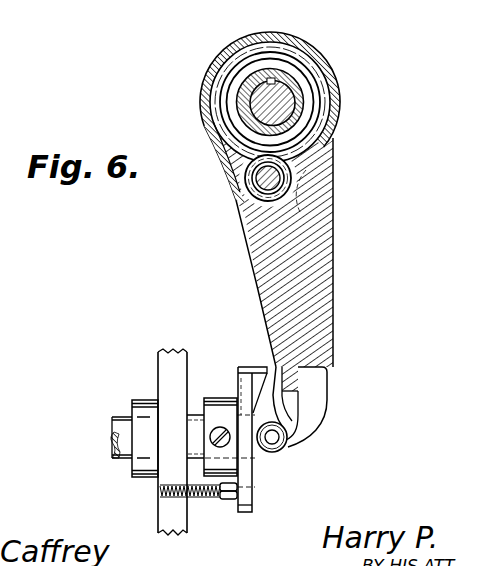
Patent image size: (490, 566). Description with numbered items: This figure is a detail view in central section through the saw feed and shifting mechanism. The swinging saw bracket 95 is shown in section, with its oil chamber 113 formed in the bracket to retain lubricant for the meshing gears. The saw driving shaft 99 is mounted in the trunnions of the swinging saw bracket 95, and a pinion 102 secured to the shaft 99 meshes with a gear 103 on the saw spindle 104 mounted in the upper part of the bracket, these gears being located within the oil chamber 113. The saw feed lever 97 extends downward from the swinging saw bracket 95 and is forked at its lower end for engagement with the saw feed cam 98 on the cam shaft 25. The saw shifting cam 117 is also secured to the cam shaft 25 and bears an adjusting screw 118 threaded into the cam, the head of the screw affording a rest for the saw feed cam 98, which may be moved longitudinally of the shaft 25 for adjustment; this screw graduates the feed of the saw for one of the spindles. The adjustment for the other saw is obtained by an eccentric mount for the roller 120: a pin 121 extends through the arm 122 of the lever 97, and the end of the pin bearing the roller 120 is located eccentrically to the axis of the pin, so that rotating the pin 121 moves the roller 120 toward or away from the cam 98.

The cam shaft 25 is at (125, 415).
The swinging saw bracket 95 is at (227, 174).
The saw feed lever 97 is at (320, 230).
The saw feed cam 98 is at (253, 487).
The saw driving shaft 99 is at (281, 178).
The pinion 102 is at (240, 208).
The gear 103 is at (325, 99).
The saw spindle 104 is at (285, 93).
The oil chamber 113 is at (334, 128).
The saw shifting cam 117 is at (165, 375).
The adjusting screw 118 is at (205, 498).
The roller 120 is at (290, 442).
The pin 121 is at (283, 443).
The arm 122 is at (316, 375).